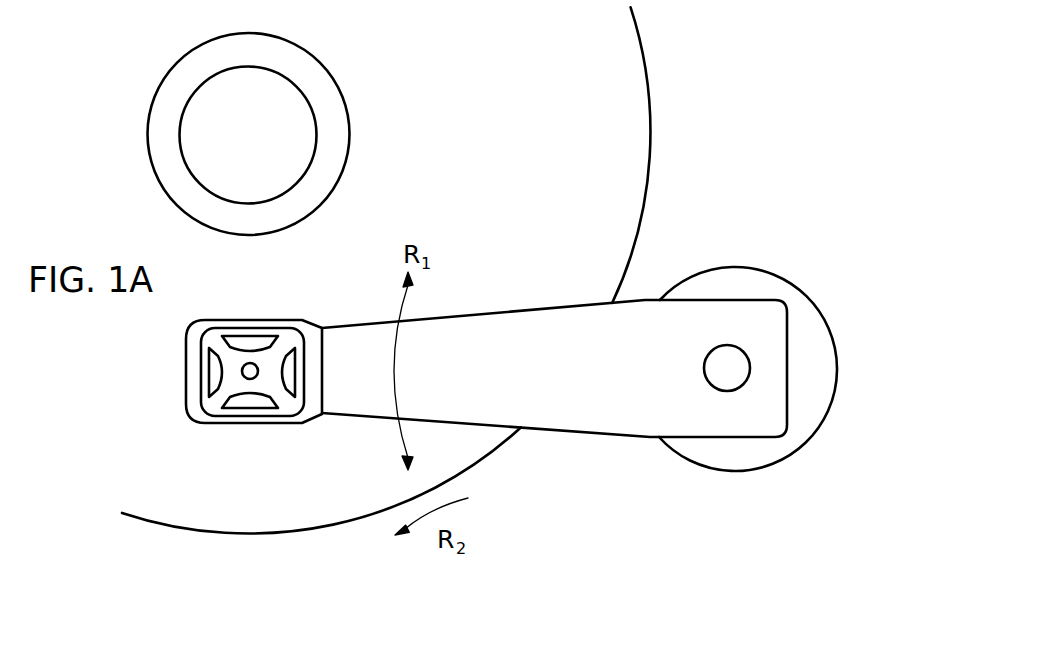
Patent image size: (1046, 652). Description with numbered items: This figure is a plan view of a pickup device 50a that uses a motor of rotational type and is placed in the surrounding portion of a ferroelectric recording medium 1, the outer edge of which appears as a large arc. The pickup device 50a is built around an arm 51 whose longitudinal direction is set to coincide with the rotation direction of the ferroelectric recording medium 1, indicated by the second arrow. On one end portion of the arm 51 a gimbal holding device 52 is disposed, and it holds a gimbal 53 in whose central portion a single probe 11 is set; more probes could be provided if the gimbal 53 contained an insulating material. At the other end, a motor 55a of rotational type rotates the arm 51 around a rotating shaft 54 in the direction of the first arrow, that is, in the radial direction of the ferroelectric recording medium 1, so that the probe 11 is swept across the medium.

The ferroelectric recording medium 1 is at (660, 125).
The probe 11 is at (250, 380).
The pickup device 50a is at (618, 376).
The arm 51 is at (575, 427).
The gimbal holding device 52 is at (308, 410).
The gimbal 53 is at (208, 415).
The rotating shaft 54 is at (727, 345).
The motor 55a is at (728, 470).